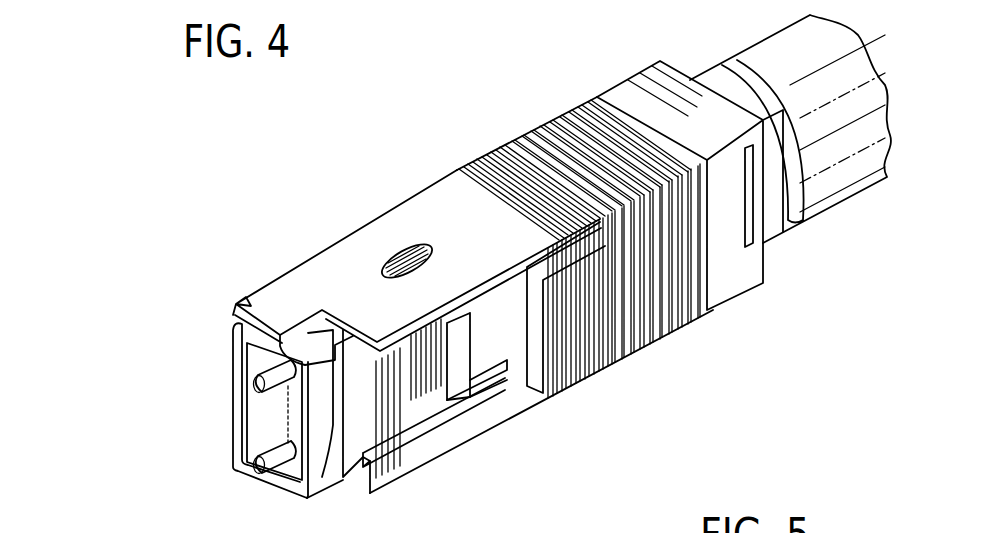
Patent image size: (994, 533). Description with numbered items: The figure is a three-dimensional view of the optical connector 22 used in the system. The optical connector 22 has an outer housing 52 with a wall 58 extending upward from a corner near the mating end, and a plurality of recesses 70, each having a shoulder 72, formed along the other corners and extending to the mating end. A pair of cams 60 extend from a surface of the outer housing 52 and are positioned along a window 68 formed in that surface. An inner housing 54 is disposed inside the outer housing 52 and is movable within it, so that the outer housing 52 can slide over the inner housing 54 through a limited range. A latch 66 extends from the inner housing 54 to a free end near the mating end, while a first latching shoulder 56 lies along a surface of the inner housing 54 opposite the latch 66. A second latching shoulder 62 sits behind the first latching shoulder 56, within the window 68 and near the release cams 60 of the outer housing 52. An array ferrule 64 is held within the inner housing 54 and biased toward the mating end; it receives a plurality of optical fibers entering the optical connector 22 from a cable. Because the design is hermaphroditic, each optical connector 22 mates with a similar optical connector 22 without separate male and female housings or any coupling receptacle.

The optical connector 22 is at (583, 103).
The outer housing 52 is at (663, 337).
The inner housing 54 is at (387, 415).
The first latching shoulder 56 is at (328, 445).
The wall 58 is at (241, 302).
The cams 60 is at (463, 427).
The second latching shoulder 62 is at (477, 357).
The array ferrule 64 is at (290, 405).
The latch 66 is at (235, 365).
The window 68 is at (420, 400).
The recesses 70 is at (471, 171).
The shoulder 72 is at (550, 170).